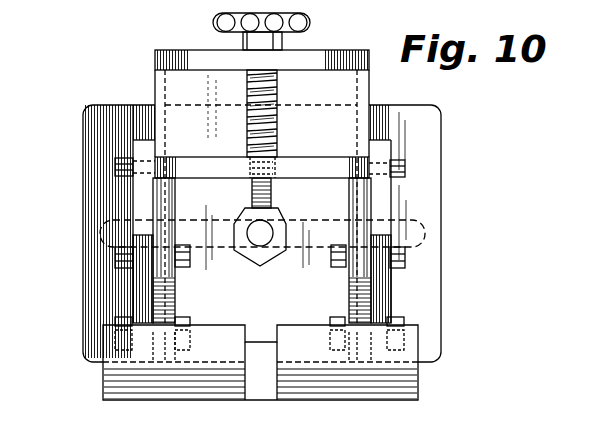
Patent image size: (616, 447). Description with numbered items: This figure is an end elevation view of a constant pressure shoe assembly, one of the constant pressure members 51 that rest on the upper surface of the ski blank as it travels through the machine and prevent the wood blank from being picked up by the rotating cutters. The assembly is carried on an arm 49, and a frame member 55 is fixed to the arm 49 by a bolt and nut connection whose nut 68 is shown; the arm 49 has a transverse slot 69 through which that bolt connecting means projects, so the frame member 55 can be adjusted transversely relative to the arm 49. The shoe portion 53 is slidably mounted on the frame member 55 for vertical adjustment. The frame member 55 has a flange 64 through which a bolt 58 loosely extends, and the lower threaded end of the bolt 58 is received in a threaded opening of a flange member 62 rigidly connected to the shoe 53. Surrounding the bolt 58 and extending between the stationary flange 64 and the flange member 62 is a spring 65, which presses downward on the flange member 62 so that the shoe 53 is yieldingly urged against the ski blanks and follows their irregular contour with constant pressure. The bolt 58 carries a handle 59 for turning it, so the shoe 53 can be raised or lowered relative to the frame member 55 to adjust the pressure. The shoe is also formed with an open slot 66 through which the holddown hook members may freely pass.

The arm 49 is at (425, 150).
The constant pressure member 51 is at (137, 296).
The shoe portion 53 is at (410, 332).
The frame member 55 is at (262, 113).
The bolt 58 is at (272, 197).
The handle 59 is at (310, 22).
The flange member 62 is at (210, 168).
The flange 64 is at (370, 62).
The spring 65 is at (312, 84).
The open slot 66 is at (277, 346).
The nut 68 is at (272, 232).
The transverse slot 69 is at (438, 218).